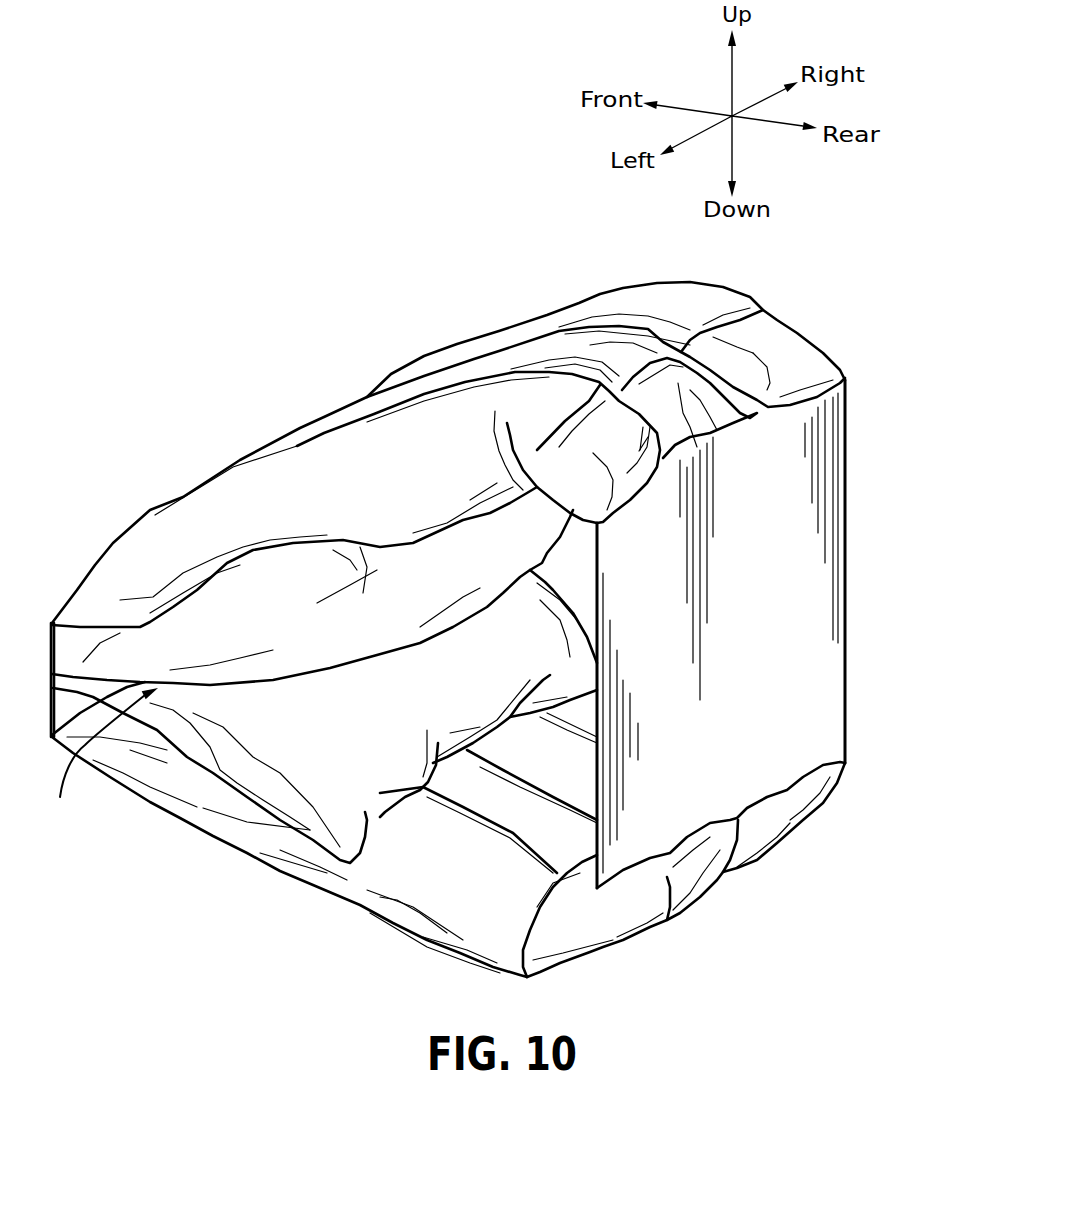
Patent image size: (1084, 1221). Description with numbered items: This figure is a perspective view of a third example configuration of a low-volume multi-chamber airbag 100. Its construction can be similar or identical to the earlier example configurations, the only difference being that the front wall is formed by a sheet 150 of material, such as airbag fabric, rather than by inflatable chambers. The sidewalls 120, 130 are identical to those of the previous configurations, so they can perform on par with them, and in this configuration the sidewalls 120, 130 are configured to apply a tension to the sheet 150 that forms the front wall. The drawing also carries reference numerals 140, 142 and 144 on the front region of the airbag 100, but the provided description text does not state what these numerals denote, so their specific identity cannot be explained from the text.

The airbag 100 is at (236, 350).
The sidewall 120 is at (315, 472).
The sidewall 130 is at (427, 882).
The opening direction arrow 140 is at (100, 755).
The upper front portion 142 is at (237, 593).
The lower front portion 144 is at (237, 760).
The sheet 150 is at (767, 600).